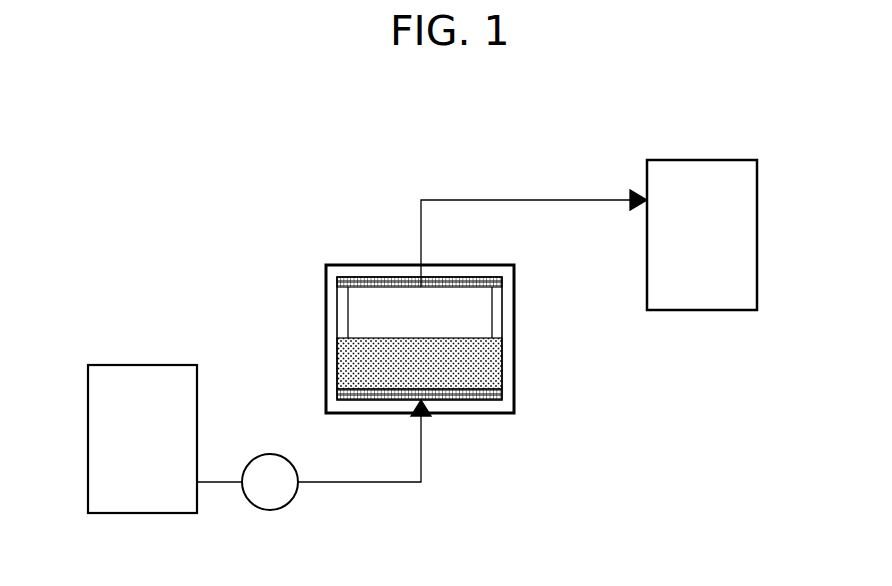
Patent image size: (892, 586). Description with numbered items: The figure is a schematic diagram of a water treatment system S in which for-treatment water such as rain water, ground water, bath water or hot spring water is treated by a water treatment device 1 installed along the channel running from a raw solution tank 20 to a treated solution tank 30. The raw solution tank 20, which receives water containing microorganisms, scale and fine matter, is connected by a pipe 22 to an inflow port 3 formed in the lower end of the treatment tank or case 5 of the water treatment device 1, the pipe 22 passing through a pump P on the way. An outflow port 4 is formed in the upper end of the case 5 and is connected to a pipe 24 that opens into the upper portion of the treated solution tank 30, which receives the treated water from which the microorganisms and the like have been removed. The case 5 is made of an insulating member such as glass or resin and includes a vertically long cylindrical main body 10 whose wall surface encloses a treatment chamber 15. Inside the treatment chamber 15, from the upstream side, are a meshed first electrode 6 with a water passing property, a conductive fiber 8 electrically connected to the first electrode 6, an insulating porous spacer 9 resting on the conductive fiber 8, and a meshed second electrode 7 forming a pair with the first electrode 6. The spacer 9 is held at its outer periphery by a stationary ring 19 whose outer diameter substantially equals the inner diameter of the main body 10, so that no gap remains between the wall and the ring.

The system S is at (607, 150).
The water treatment device 1 is at (323, 253).
The inflow port 3 is at (424, 415).
The outflow port 4 is at (424, 261).
The treatment tank (case) 5 is at (496, 413).
The first electrode 6 is at (494, 395).
The second electrode 7 is at (338, 287).
The conductive fiber 8 is at (340, 377).
The spacer 9 is at (381, 297).
The main body 10 is at (324, 337).
The treatment chamber 15 is at (498, 278).
The stationary ring 19 is at (495, 312).
The raw solution tank 20 is at (138, 365).
The pipe 22 is at (362, 483).
The pipe 24 is at (463, 200).
The treated solution tank 30 is at (695, 310).
The pump P is at (270, 482).